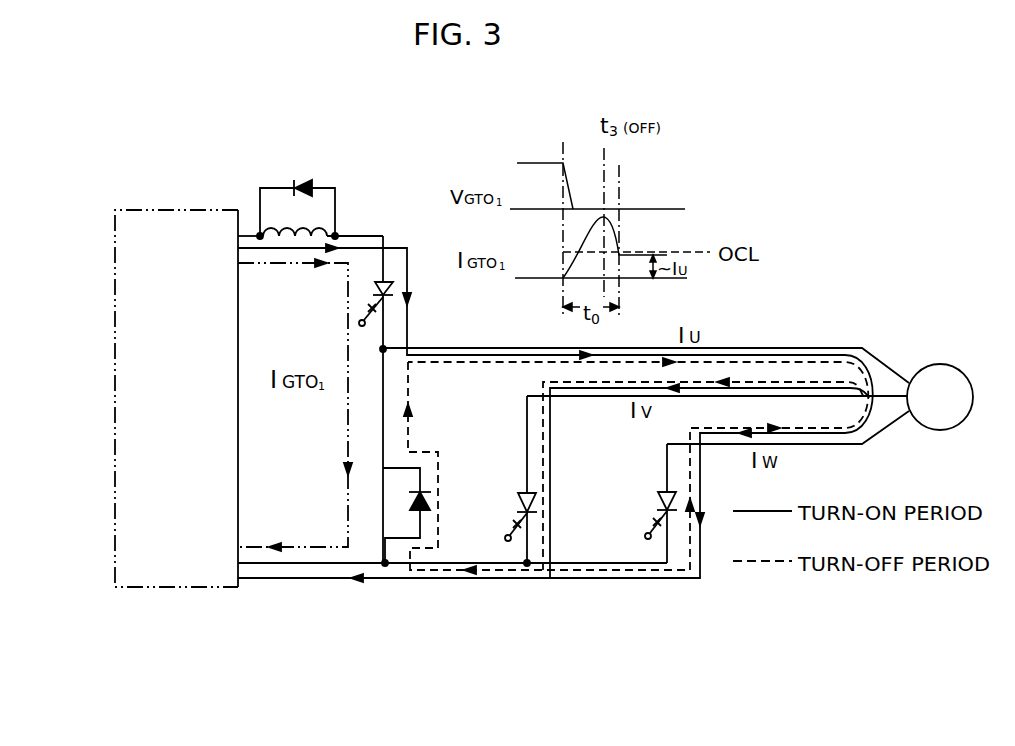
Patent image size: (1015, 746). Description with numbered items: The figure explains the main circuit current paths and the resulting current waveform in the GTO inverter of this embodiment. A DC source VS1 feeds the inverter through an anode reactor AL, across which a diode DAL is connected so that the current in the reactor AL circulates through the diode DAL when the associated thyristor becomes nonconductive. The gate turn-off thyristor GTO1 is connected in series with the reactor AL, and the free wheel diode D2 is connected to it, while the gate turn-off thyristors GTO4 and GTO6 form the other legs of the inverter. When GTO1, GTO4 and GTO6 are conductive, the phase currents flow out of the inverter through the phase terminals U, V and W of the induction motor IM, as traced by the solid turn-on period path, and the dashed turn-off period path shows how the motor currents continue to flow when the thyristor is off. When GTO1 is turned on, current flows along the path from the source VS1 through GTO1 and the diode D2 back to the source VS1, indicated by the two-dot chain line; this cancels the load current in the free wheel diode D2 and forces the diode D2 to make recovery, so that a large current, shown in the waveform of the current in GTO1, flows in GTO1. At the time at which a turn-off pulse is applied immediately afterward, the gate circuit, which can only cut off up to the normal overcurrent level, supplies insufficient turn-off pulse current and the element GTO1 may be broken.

The DC voltage source VS1 is at (208, 210).
The anode reactor AL is at (286, 230).
The anode reactor diode DAL is at (303, 180).
The gate turn-off thyristor GTO1 is at (395, 288).
The gate turn-off thyristor GTO4 is at (520, 497).
The gate turn-off thyristor GTO6 is at (656, 496).
The free wheel diode D2 is at (408, 500).
The motor phase terminal U is at (646, 361).
The motor phase terminal V is at (717, 385).
The motor phase terminal W is at (788, 434).
The induction motor IM is at (957, 410).